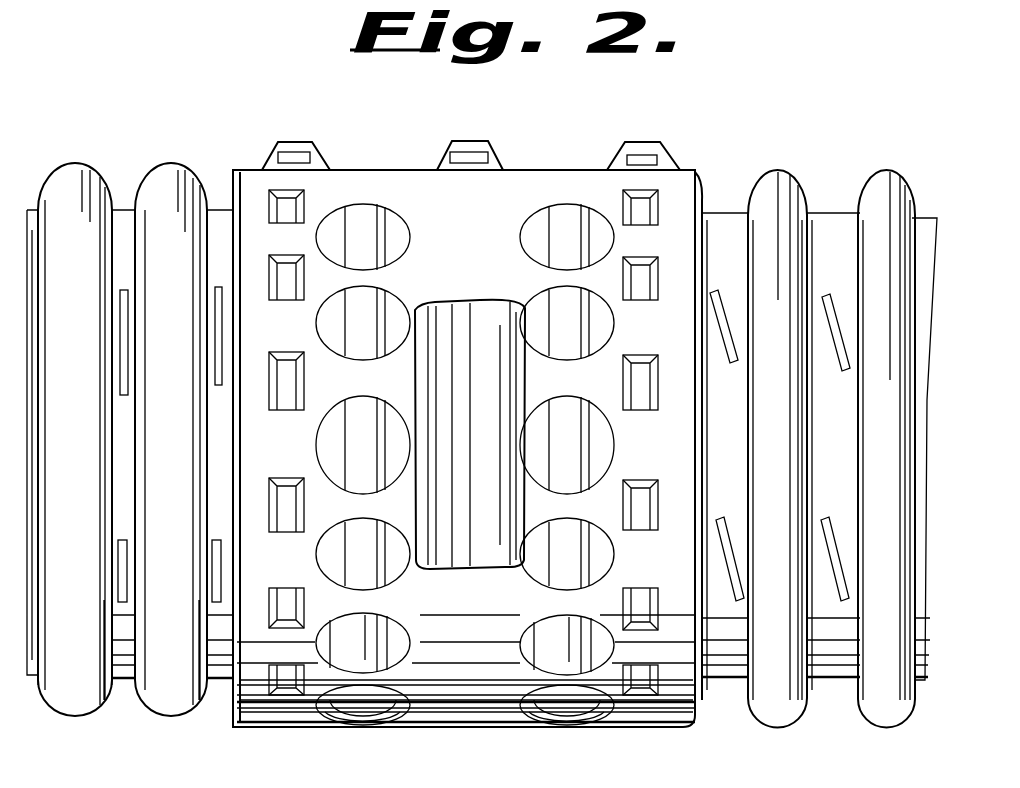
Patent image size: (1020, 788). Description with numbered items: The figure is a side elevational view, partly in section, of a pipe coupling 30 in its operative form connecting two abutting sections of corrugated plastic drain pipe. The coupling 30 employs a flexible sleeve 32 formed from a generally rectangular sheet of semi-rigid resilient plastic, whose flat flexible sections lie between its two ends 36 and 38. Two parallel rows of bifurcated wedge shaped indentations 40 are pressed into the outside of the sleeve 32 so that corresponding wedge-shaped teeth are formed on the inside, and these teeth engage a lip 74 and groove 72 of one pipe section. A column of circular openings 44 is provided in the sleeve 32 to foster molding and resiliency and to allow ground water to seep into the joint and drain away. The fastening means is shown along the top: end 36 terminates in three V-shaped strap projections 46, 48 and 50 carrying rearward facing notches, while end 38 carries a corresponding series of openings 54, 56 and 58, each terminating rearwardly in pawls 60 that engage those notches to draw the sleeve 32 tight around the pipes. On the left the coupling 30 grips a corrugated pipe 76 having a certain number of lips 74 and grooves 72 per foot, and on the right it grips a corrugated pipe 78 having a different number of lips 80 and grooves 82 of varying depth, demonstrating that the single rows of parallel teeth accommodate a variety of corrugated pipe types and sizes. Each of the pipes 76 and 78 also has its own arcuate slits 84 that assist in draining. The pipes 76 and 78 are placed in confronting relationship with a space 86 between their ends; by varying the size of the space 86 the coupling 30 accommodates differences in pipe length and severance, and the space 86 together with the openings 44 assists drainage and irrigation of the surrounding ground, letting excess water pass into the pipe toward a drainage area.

The pipe coupling 30 is at (400, 165).
The flexible sleeve 32 is at (437, 724).
The end of sleeve 36 is at (466, 750).
The end of sleeve 38 is at (527, 775).
The bifurcated wedge shaped indentations 40 is at (284, 498).
The circular openings 44 is at (330, 722).
The V-shaped strap projection 46 is at (270, 165).
The V-shaped strap projection 48 is at (420, 165).
The V-shaped strap projection 50 is at (612, 167).
The opening 54 is at (298, 145).
The opening 56 is at (480, 145).
The opening 58 is at (662, 145).
The pawls 60 is at (466, 734).
The groove 72 is at (128, 700).
The lip 74 is at (72, 712).
The corrugated pipe 76 is at (130, 178).
The corrugated pipe 78 is at (812, 190).
The lips 80 is at (704, 715).
The grooves 82 is at (727, 680).
The arcuate slits 84 is at (128, 290).
The space 86 is at (472, 318).